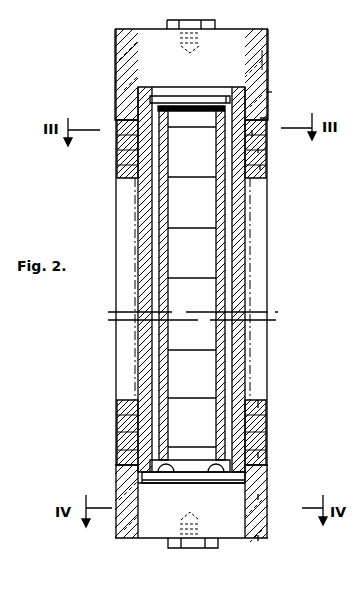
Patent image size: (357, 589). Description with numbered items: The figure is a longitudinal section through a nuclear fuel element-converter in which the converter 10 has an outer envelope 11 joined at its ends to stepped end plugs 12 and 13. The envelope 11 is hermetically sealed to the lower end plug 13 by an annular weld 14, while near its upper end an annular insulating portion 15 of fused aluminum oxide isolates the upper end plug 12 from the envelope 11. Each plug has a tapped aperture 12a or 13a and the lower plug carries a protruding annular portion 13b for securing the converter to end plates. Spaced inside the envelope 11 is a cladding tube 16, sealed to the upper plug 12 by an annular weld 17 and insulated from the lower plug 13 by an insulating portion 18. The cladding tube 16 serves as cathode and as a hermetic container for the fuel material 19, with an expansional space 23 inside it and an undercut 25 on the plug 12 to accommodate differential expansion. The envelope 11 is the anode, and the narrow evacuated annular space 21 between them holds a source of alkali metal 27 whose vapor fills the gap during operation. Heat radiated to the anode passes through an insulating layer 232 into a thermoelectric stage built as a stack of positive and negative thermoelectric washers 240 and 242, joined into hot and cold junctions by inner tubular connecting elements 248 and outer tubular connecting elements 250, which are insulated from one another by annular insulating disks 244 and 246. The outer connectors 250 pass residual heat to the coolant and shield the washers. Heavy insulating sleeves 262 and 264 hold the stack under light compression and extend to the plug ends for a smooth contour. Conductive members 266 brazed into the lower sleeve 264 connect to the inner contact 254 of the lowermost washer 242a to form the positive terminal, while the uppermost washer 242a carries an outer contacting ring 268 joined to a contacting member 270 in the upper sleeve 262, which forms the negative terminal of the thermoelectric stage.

The converter 10 is at (298, 338).
The envelope 11 is at (238, 393).
The stepped end plug 12 is at (268, 46).
The tapped aperture 12a is at (204, 42).
The stepped end plug 13 is at (270, 518).
The tapped aperture 13a is at (208, 522).
The protruding annular portion 13b is at (178, 45).
The annular weld 14 is at (253, 478).
The insulating portion 15 is at (262, 97).
The cladding tube 16 is at (257, 159).
The annular weld 17 is at (228, 97).
The insulating portion 18 is at (268, 418).
The fuel material 19 is at (228, 196).
The annular space 21 is at (235, 212).
The expansional space 23 is at (148, 128).
The undercut 25 is at (155, 101).
The source of alkali metal 27 is at (270, 442).
The insulating layer 232 is at (250, 217).
The thermoelectric washer 240 is at (245, 145).
The thermoelectric washer 242 is at (267, 403).
The thermoelectric washer 242a is at (268, 120).
The annular insulating disk 244 is at (253, 167).
The annular insulating disk 246 is at (262, 150).
The tubular connecting element 248 is at (258, 182).
The tubular connecting element 250 is at (268, 167).
The inner contact 254 is at (225, 462).
The insulating sleeve 262 is at (268, 60).
The insulating sleeve 264 is at (263, 537).
The conductive members 266 is at (262, 497).
The outer contacting ring 268 is at (256, 133).
The contacting member 270 is at (272, 93).